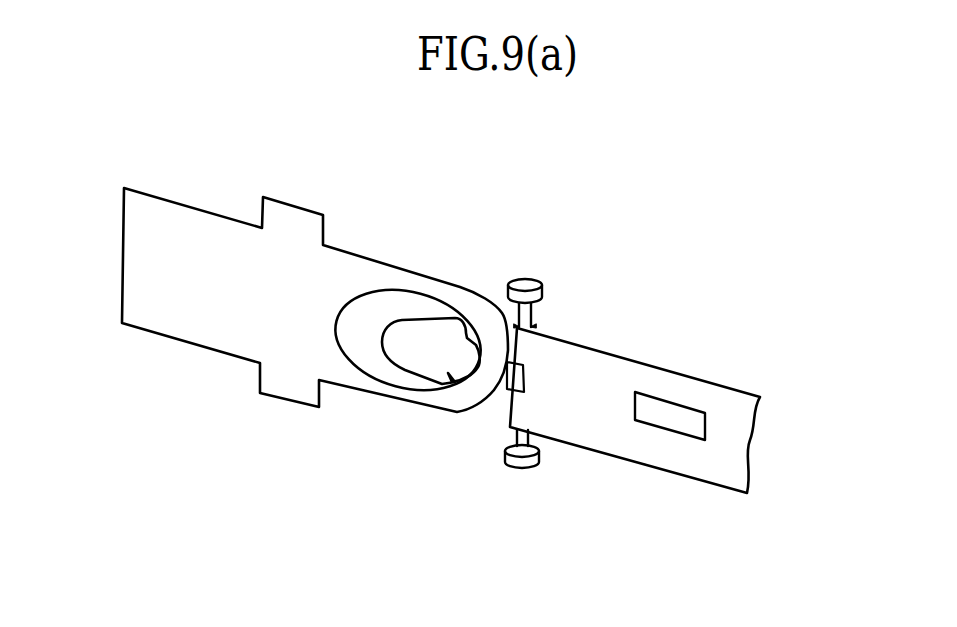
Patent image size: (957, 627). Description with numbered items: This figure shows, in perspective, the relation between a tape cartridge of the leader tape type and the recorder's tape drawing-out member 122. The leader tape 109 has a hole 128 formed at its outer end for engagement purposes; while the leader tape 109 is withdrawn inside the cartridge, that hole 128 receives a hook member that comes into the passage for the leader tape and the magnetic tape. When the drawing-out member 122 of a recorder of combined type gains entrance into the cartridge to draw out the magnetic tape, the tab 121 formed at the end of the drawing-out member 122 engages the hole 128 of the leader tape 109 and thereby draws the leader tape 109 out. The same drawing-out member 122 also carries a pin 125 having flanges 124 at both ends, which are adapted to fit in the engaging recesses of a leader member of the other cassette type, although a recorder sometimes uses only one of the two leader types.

The leader tape 109 is at (212, 238).
The hole 128 is at (377, 305).
The tab 121 is at (420, 352).
The tape drawing-out member 122 is at (573, 355).
The pin 125 is at (517, 268).
The flanges 124 is at (545, 286).